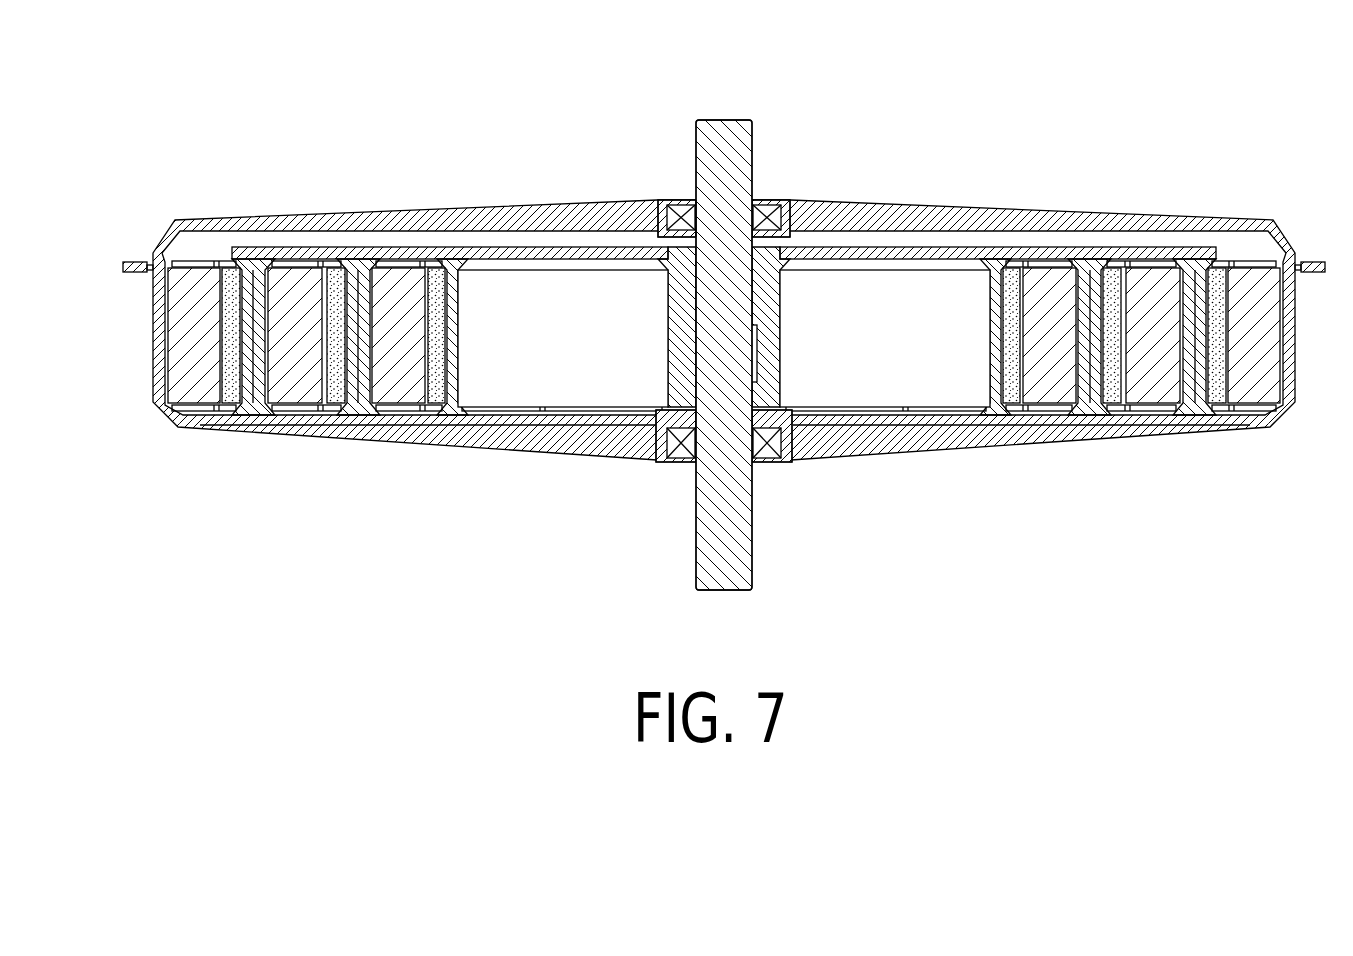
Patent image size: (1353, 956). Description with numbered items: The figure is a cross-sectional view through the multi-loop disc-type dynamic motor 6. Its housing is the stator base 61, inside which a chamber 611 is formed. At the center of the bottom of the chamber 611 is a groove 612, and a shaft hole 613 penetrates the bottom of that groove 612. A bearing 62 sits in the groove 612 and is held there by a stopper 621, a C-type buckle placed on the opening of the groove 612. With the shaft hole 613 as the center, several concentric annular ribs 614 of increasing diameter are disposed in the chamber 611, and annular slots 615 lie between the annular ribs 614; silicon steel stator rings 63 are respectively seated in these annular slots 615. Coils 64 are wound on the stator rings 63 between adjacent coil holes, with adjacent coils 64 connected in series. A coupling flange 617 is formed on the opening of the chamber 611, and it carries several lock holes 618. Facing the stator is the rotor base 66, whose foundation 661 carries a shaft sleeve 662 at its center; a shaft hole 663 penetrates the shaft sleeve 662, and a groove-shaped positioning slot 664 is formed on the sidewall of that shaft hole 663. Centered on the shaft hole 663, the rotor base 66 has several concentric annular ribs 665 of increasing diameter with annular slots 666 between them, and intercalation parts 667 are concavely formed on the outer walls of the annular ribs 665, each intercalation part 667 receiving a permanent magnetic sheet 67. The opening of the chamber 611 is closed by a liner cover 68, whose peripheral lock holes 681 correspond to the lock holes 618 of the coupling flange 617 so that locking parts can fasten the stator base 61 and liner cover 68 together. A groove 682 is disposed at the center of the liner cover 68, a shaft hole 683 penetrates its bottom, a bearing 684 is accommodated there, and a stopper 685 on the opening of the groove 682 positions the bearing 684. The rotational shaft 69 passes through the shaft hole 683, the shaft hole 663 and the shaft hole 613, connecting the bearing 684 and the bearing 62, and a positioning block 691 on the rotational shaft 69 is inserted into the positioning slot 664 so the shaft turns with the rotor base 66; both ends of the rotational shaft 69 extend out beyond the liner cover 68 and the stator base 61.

The multi-loop disc-type dynamic motor 6 is at (706, 362).
The stator base 61 is at (413, 433).
The chamber 611 is at (520, 408).
The groove 612 is at (675, 463).
The shaft hole 613 is at (712, 463).
The annular ribs 614 is at (260, 412).
The annular slots 615 is at (327, 410).
The coupling flange 617 is at (128, 273).
The lock holes 618 is at (148, 272).
The bearing 62 is at (768, 462).
The stopper 621 is at (837, 457).
The stator rings 63 is at (1260, 383).
The coil 64 is at (1254, 265).
The rotor base 66 is at (724, 314).
The foundation 661 is at (537, 252).
The shaft sleeve 662 is at (780, 372).
The shaft hole 663 is at (753, 307).
The positioning slot 664 is at (780, 347).
The annular ribs 665 is at (395, 298).
The annular slots 666 is at (322, 270).
The intercalation parts 667 is at (207, 295).
The permanent magnetic sheet 67 is at (185, 298).
The liner cover 68 is at (860, 210).
The lock holes 681 is at (1305, 265).
The groove 682 is at (775, 200).
The shaft hole 683 is at (700, 200).
The bearing 684 is at (678, 210).
The stopper 685 is at (655, 233).
The rotational shaft 69 is at (728, 582).
The positioning block 691 is at (767, 332).